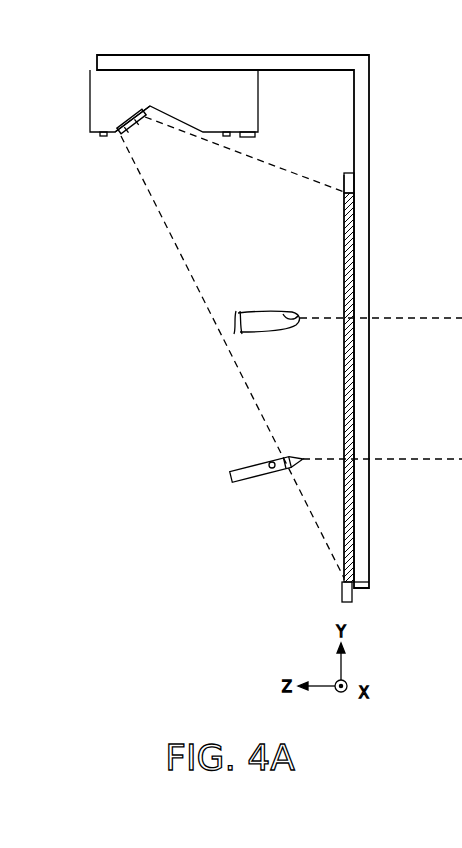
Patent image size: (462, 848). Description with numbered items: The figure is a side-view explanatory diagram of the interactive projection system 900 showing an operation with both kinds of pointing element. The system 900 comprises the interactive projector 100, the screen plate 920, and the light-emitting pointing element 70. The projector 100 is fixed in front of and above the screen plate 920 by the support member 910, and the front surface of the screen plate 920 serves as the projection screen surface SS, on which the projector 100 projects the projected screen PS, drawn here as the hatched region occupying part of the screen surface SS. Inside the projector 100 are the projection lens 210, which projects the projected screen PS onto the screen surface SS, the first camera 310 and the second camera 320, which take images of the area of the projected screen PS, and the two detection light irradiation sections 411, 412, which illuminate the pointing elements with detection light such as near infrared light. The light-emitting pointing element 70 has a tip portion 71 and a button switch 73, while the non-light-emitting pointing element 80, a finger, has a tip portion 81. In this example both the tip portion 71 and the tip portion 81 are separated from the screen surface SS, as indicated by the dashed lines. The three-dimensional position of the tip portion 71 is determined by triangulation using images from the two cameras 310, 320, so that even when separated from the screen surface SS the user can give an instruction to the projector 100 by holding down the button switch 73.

The interactive projector 100 is at (214, 82).
The interactive projection system 900 is at (398, 85).
The support member 910 is at (363, 168).
The screen plate 920 is at (350, 184).
The projection screen surface SS is at (345, 185).
The projected screen PS is at (343, 268).
The first camera 310 is at (124, 120).
The second camera 320 is at (253, 136).
The detection light irradiation section 411 is at (227, 137).
The detection light irradiation section 412 is at (101, 137).
The projection lens 210 is at (119, 136).
The non-light-emitting pointing element 80 is at (259, 322).
The tip portion 81 is at (298, 314).
The light-emitting pointing element 70 is at (229, 474).
The tip portion 71 is at (302, 458).
The button switch 73 is at (272, 470).